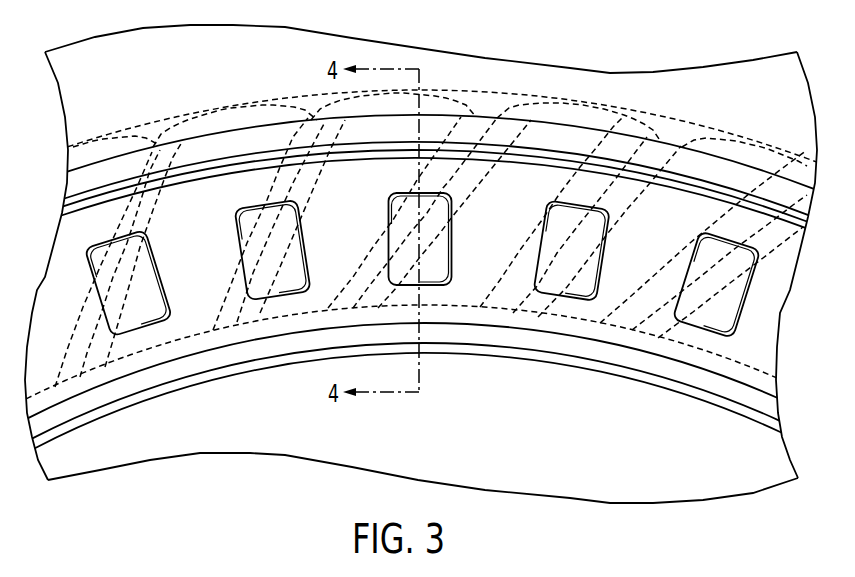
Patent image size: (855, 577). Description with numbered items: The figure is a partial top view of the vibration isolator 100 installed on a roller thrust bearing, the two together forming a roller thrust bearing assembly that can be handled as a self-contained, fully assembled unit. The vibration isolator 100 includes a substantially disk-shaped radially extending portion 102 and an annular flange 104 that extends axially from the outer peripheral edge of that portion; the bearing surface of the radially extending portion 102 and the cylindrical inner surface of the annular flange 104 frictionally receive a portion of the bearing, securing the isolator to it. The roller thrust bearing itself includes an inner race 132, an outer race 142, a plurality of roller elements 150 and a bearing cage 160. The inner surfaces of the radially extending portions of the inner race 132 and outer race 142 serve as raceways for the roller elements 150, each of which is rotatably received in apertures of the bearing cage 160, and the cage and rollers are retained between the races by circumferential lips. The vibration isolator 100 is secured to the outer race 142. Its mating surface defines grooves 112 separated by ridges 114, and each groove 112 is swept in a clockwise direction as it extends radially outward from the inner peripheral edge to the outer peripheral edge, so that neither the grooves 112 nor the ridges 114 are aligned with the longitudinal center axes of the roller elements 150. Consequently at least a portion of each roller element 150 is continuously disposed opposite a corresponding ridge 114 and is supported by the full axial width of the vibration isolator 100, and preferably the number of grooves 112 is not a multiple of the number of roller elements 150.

The vibration isolator 100 is at (143, 103).
The radially extending portion 102 is at (698, 352).
The annular flange 104 is at (442, 96).
The groove 112 is at (245, 183).
The ridge 114 is at (310, 116).
The inner race 132 is at (404, 385).
The outer race 142 is at (503, 116).
The roller element 150 is at (136, 320).
The bearing cage 160 is at (187, 304).